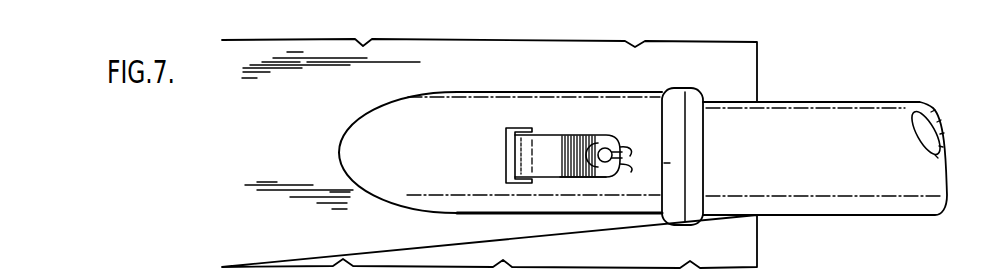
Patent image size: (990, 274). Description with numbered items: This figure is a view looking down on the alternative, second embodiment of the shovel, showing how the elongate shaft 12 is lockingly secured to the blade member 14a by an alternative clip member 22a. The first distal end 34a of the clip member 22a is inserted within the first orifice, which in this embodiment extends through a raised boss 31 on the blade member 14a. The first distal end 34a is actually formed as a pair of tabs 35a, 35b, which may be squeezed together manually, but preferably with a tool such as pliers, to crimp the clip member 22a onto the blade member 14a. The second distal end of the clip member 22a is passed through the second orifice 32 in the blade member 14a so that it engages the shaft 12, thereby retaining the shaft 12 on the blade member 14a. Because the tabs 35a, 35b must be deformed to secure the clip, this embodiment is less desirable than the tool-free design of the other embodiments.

The elongate shaft 12 is at (884, 123).
The blade member 14a is at (308, 242).
The clip member 22a is at (560, 147).
The raised boss 31 is at (630, 158).
The second orifice 32 is at (512, 182).
The first distal end 34a is at (587, 167).
The tab 35a is at (618, 177).
The tab 35b is at (615, 142).